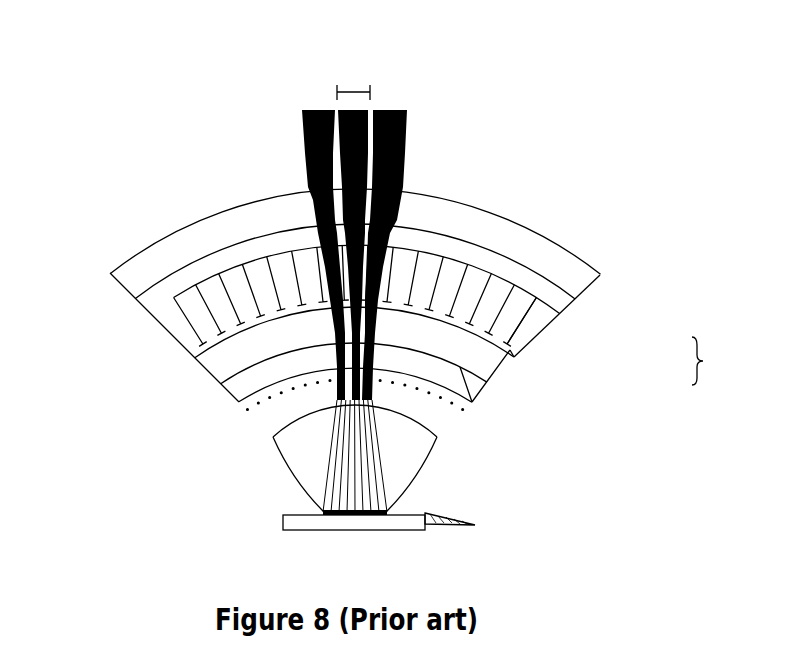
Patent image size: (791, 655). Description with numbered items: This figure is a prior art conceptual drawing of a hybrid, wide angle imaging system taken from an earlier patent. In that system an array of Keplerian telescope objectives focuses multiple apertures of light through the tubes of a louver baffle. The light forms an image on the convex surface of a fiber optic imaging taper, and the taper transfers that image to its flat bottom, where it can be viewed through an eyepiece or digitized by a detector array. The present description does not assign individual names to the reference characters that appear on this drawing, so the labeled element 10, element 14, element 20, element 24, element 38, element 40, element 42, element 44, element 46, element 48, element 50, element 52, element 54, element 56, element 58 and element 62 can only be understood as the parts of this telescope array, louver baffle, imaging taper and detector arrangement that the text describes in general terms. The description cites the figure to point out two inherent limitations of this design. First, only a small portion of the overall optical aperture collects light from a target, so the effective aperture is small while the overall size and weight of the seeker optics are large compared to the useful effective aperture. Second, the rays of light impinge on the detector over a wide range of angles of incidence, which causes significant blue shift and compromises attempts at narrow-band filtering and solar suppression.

The ultrasound probe 10 is at (640, 170).
The ultrasound transducer 14 is at (719, 361).
The backing / acoustic stack 20 is at (323, 473).
The flexible circuit / electrical connection 24 is at (475, 525).
The elevation aperture width 38 is at (353, 90).
The ultrasound beams 40 is at (410, 127).
The outer lens layer 42 is at (110, 273).
The matching layer 44 is at (135, 297).
The matching layer 46 is at (174, 298).
The piezoelectric layer 48 is at (195, 358).
The dematching layer 50 is at (221, 384).
The backing layer 52 is at (239, 402).
The electrode layer 54 is at (557, 284).
The piezoelectric element 56 is at (530, 330).
The kerf 58 is at (510, 350).
The interconnect layer 62 is at (447, 403).